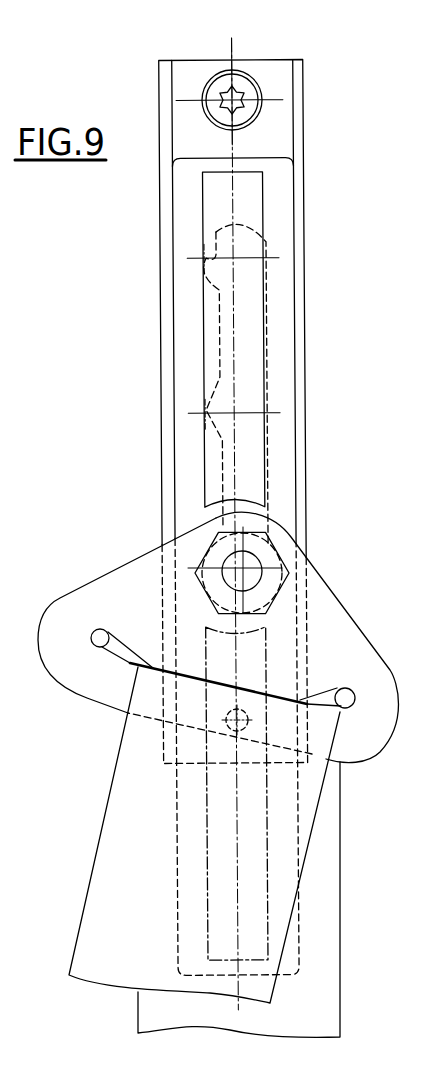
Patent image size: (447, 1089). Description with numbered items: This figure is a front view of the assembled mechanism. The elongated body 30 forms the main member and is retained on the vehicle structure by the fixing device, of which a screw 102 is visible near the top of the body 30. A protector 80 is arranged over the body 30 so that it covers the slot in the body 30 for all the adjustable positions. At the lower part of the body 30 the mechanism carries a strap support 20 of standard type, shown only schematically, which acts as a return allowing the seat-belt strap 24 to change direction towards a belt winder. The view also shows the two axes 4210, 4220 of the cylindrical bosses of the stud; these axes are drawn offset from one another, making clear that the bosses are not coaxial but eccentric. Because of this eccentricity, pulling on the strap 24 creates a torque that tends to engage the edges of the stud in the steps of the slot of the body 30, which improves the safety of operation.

The strap support 20 is at (363, 743).
The strap 24 is at (122, 809).
The body 30 is at (305, 118).
The protector 80 is at (283, 214).
The screw 102 is at (217, 88).
The axis of the boss 4210 is at (235, 562).
The axis of the boss 4220 is at (243, 572).